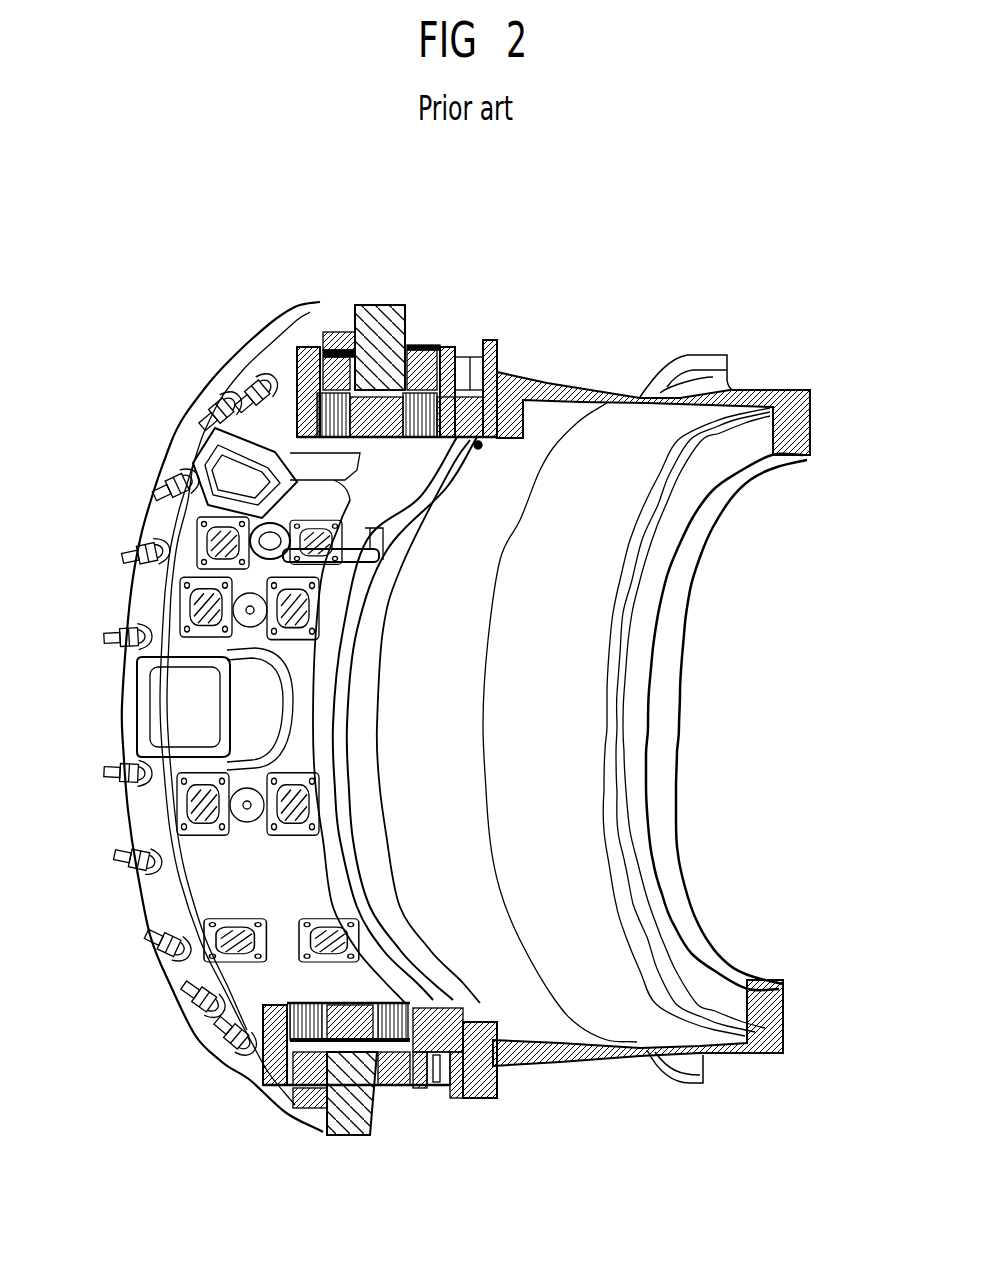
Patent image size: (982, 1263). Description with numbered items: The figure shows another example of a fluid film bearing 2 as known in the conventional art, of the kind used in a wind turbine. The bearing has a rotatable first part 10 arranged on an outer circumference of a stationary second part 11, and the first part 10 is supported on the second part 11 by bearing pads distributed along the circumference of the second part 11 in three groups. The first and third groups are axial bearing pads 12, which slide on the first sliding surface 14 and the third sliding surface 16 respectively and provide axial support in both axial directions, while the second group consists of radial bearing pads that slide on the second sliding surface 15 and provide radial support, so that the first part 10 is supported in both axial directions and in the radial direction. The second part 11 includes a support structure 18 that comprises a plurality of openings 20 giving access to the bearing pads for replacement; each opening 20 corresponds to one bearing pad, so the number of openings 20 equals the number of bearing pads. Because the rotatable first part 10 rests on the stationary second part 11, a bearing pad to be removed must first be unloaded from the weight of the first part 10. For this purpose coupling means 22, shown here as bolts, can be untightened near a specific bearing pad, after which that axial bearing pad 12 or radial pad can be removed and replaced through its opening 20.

The fluid film bearing 2 is at (348, 290).
The first part 10 is at (395, 330).
The second part 11 is at (340, 440).
The axial bearing pads 12 is at (462, 342).
The first sliding surface 14 is at (313, 357).
The second sliding surface 15 is at (500, 376).
The third sliding surface 16 is at (413, 347).
The support structure 18 is at (303, 700).
The openings 20 is at (160, 490).
The coupling means 22 is at (207, 1045).